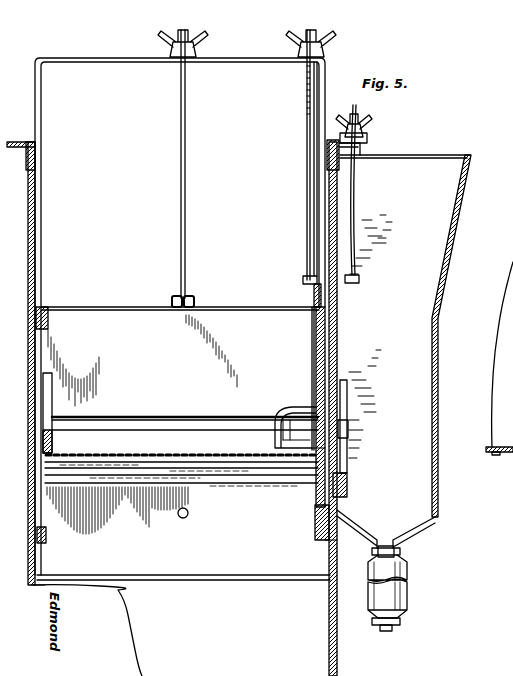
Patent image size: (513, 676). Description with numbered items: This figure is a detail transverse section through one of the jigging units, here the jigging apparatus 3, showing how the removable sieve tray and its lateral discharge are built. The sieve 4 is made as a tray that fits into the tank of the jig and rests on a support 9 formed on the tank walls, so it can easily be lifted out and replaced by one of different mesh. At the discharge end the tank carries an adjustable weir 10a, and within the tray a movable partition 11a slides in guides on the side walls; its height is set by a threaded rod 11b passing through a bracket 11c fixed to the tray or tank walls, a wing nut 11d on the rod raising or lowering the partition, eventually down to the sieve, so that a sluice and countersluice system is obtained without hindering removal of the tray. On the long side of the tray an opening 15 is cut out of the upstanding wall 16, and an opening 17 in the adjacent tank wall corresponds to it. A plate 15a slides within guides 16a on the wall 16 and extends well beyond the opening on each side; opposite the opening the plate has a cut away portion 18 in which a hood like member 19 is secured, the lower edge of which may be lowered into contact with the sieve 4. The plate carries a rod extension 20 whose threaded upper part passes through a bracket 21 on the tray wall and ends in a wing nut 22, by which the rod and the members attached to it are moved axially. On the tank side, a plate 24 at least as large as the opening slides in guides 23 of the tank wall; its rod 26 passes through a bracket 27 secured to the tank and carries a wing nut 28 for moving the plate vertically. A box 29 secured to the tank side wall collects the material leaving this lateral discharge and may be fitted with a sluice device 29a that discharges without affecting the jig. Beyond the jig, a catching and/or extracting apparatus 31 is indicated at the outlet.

The jigging apparatus 3 is at (344, 658).
The sieve 4 is at (152, 440).
The support 9 is at (40, 572).
The adjustable weir 10a is at (190, 568).
The movable partition 11a is at (126, 322).
The threaded rod 11b is at (181, 212).
The bracket 11c is at (35, 96).
The wing nut 11d is at (168, 38).
The opening 15 is at (322, 438).
The plate 15a is at (314, 358).
The upstanding wall 16 is at (318, 505).
The guides 16a is at (314, 330).
The opening 17 is at (348, 432).
The cut away portion 18 is at (280, 413).
The hood like member 19 is at (290, 407).
The rod extension 20 is at (307, 176).
The bracket 21 is at (319, 216).
The wing nut 22 is at (326, 52).
The guides 23 is at (347, 480).
The plate 24 is at (347, 455).
The rod 26 is at (357, 222).
The bracket 27 is at (368, 142).
The wing nut 28 is at (366, 124).
The box 29 is at (413, 530).
The sluice device 29a is at (408, 602).
The catching and/or extracting apparatus 31 is at (512, 542).